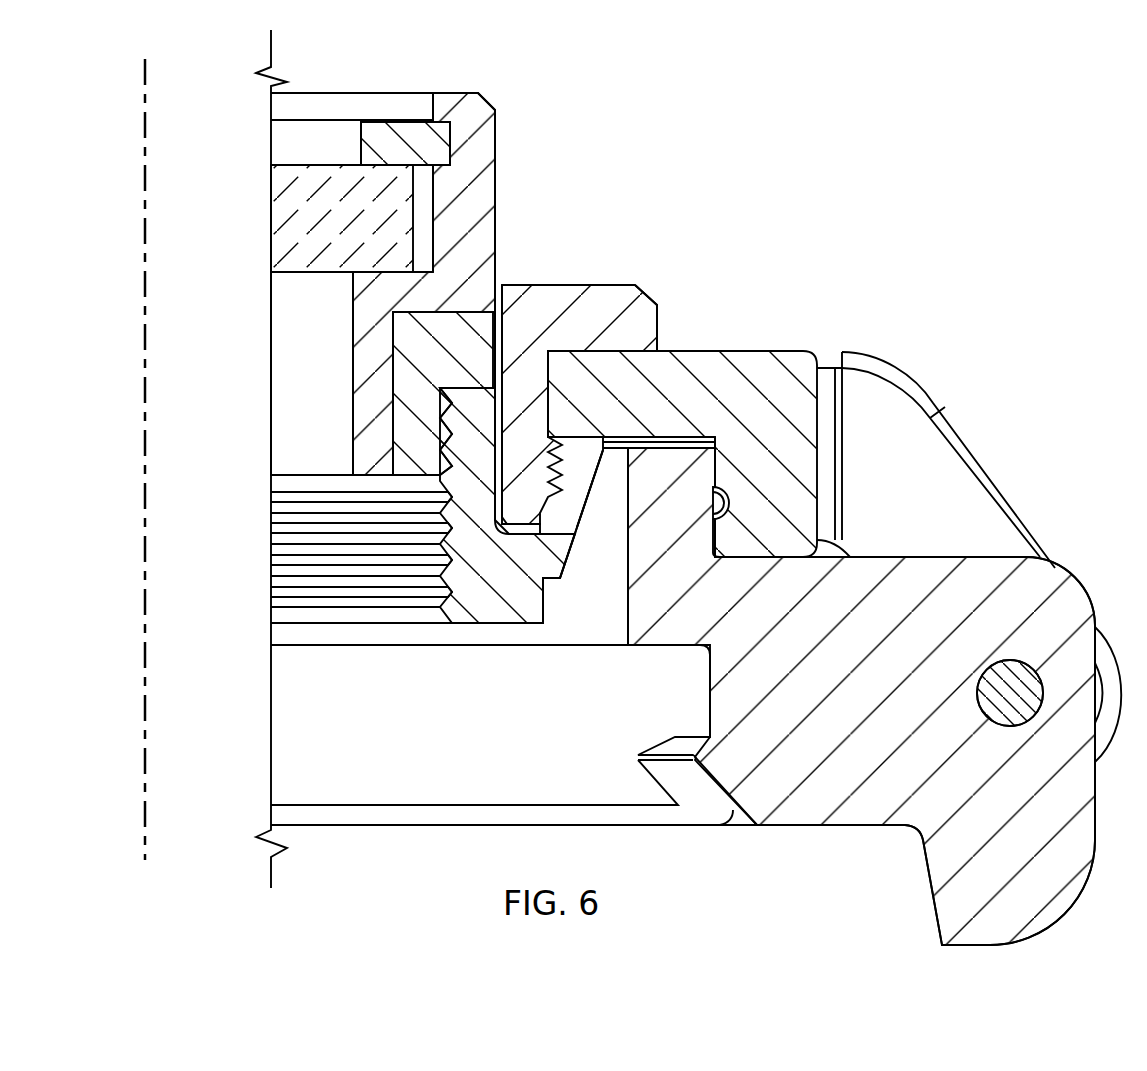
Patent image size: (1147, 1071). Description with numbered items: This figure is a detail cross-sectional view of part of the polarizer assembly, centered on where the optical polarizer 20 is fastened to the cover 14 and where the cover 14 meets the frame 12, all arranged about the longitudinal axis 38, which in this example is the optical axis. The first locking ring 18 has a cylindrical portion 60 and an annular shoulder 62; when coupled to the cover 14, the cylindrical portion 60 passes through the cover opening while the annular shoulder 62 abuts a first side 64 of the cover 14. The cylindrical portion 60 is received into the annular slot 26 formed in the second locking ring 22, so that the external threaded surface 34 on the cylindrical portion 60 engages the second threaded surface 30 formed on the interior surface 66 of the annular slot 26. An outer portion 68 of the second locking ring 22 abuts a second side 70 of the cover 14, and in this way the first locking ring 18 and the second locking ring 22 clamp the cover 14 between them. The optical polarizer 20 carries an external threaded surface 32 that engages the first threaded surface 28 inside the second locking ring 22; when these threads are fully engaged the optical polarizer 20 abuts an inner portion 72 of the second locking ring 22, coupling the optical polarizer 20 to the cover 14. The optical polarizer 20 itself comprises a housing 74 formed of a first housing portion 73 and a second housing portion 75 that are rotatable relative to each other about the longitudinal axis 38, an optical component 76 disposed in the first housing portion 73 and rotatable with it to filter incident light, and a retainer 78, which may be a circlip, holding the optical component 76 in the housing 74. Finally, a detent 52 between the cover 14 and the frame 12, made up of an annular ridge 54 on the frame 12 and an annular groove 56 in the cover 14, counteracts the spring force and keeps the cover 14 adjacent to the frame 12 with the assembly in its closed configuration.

The frame 12 is at (662, 647).
The cover 14 is at (787, 350).
The first locking ring 18 is at (560, 285).
The optical polarizer 20 is at (495, 183).
The second locking ring 22 is at (437, 543).
The annular slot 26 is at (565, 520).
The first threaded surface 28 is at (463, 392).
The second threaded surface 30 is at (647, 419).
The external threaded surface 32 is at (450, 463).
The external threaded surface 34 is at (557, 513).
The longitudinal axis 38 is at (143, 462).
The detent 52 is at (847, 497).
The annular ridge 54 is at (716, 497).
The annular groove 56 is at (723, 487).
The cylindrical portion 60 is at (503, 412).
The annular shoulder 62 is at (613, 285).
The first side 64 is at (698, 350).
The interior surface 66 is at (659, 443).
The outer portion 68 is at (565, 572).
The second side 70 is at (667, 442).
The inner portion 72 is at (452, 432).
The first housing portion 73 is at (450, 92).
The housing 74 is at (548, 88).
The second housing portion 75 is at (450, 510).
The optical component 76 is at (328, 277).
The retainer 78 is at (398, 120).